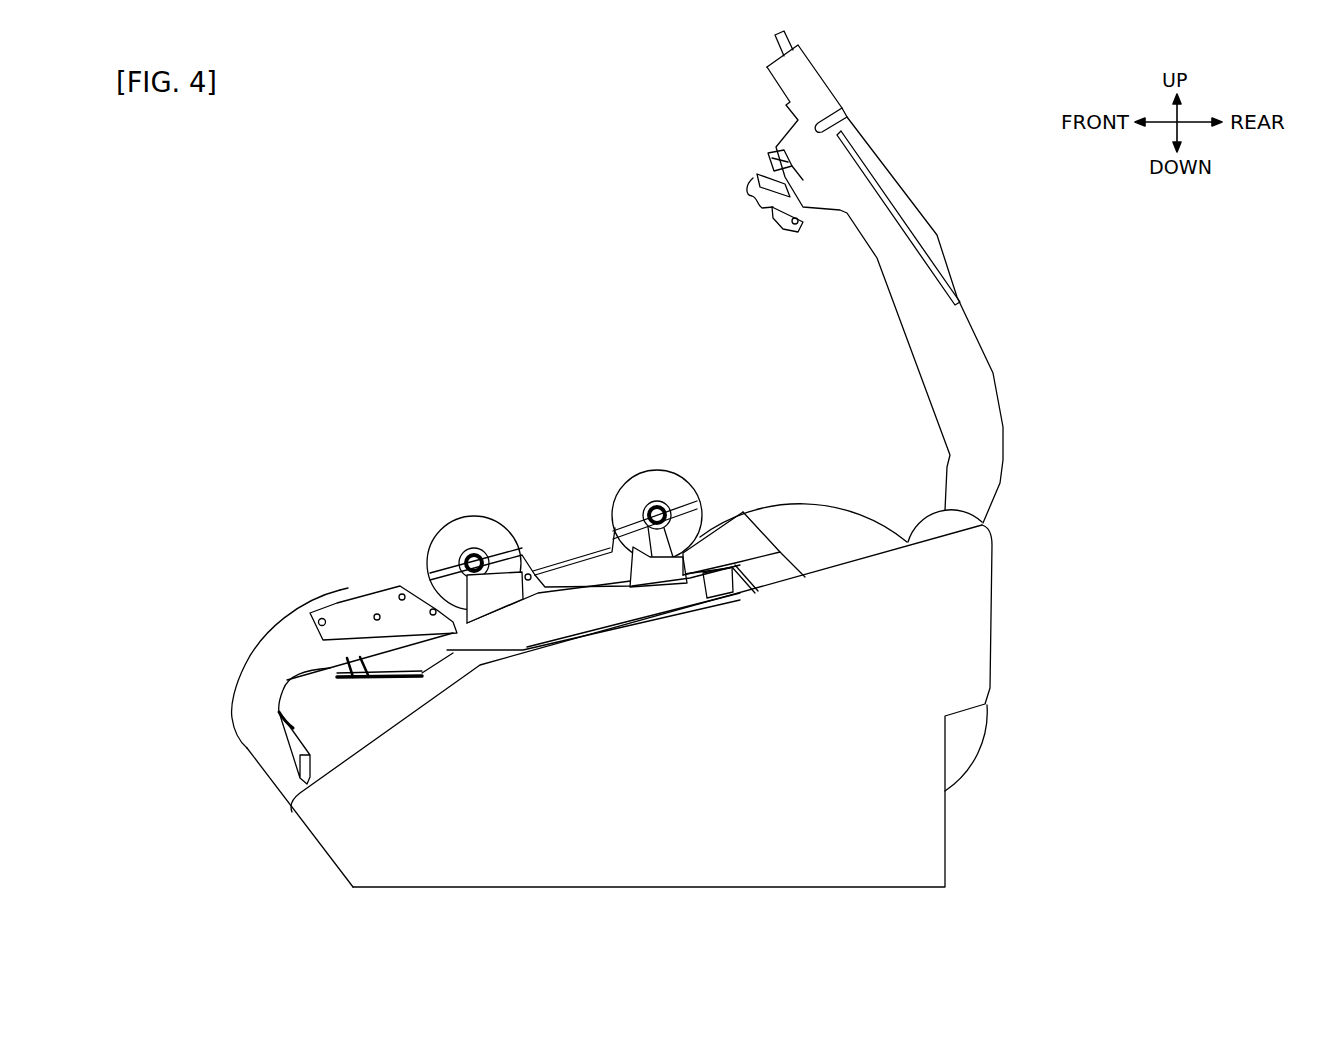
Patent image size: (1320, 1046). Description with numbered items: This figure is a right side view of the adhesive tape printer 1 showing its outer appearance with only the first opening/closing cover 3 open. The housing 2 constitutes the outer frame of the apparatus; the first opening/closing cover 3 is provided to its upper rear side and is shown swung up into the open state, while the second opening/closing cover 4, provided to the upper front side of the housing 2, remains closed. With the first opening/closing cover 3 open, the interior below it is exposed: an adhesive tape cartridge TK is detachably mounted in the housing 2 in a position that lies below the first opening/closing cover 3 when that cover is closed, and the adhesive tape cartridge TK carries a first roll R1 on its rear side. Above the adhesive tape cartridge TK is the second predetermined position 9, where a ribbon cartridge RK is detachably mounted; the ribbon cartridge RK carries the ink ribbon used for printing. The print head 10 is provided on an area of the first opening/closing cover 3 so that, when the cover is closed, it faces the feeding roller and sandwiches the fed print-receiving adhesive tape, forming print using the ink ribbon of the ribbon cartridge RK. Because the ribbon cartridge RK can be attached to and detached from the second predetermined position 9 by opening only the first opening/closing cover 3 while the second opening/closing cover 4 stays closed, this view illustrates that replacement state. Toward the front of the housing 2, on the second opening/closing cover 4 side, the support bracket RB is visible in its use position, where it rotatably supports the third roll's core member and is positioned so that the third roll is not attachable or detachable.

The adhesive tape printer 1 is at (462, 306).
The housing 2 is at (990, 628).
The first opening/closing cover 3 is at (940, 234).
The second opening/closing cover 4 is at (263, 628).
The second predetermined position 9 is at (597, 533).
The print head 10 is at (770, 177).
The support bracket RB is at (350, 657).
The ribbon cartridge RK is at (583, 552).
The adhesive tape cartridge TK is at (780, 512).
The first roll R1 is at (830, 510).